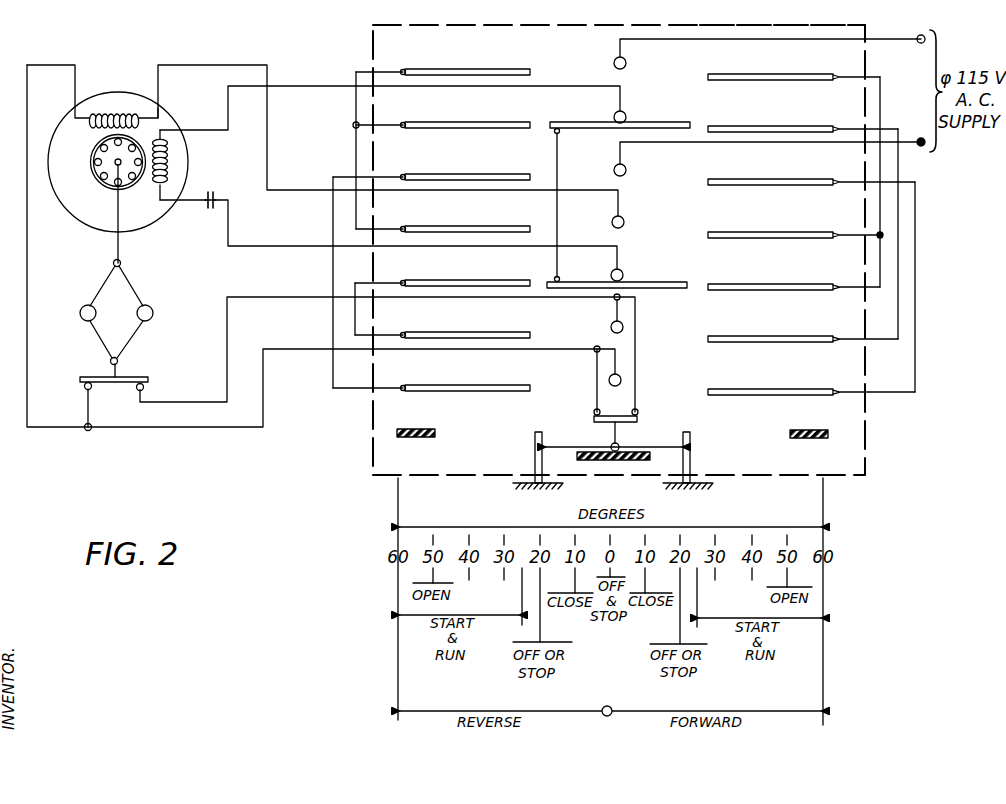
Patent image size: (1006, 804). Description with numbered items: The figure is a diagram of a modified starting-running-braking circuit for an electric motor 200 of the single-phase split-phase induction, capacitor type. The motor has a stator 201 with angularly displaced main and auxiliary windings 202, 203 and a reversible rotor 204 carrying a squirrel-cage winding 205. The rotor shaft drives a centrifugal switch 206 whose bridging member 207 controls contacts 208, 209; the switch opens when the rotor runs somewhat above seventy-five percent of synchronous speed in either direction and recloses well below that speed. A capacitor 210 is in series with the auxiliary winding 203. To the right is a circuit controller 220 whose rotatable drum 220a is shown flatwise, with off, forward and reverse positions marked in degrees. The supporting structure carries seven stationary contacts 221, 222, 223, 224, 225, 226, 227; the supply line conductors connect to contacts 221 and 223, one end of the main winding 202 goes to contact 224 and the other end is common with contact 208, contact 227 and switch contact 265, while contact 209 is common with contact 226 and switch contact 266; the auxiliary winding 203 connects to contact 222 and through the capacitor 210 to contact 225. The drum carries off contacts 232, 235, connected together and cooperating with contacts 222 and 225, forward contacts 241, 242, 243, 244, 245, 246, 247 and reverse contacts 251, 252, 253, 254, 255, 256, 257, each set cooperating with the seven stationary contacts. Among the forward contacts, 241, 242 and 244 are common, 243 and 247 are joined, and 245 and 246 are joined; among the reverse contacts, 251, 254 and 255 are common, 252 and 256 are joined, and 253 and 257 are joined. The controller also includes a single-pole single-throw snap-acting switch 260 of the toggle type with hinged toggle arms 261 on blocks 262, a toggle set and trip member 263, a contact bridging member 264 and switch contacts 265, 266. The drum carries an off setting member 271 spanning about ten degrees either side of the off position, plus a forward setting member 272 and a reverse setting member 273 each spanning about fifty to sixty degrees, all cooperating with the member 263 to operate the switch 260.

The electric motor 200 is at (130, 86).
The stator 201 is at (193, 112).
The main winding 202 is at (95, 118).
The auxiliary winding 203 is at (172, 168).
The reversible rotor 204 is at (97, 162).
The squirrel-cage winding 205 is at (108, 174).
The centrifugal switch 206 is at (176, 287).
The bridging member 207 is at (130, 372).
The contact 208 is at (84, 388).
The contact 209 is at (145, 388).
The capacitor 210 is at (210, 208).
The circuit controller 220 is at (430, 31).
The drum 220a is at (760, 33).
The stationary contact 221 is at (628, 68).
The stationary contact 222 is at (628, 116).
The stationary contact 223 is at (628, 169).
The stationary contact 224 is at (626, 221).
The stationary contact 225 is at (625, 274).
The stationary contact 226 is at (625, 326).
The stationary contact 227 is at (623, 379).
The off contact 232 is at (556, 127).
The off contact 235 is at (558, 281).
The forward contact 241 is at (415, 71).
The forward contact 242 is at (418, 128).
The forward contact 243 is at (415, 175).
The forward contact 244 is at (415, 228).
The forward contact 245 is at (415, 281).
The forward contact 246 is at (415, 333).
The forward contact 247 is at (415, 386).
The reverse contact 251 is at (745, 76).
The reverse contact 252 is at (745, 128).
The reverse contact 253 is at (742, 178).
The reverse contact 254 is at (742, 230).
The reverse contact 255 is at (742, 283).
The reverse contact 256 is at (742, 335).
The reverse contact 257 is at (742, 388).
The snap-acting switch 260 is at (611, 442).
The toggle arms 261 is at (582, 444).
The blocks 262 is at (535, 460).
The toggle set and trip member 263 is at (612, 452).
The contact bridging member 264 is at (594, 419).
The switch contact 265 is at (594, 408).
The switch contact 266 is at (638, 410).
The off setting member 271 is at (628, 462).
The forward setting member 272 is at (420, 428).
The reverse setting member 273 is at (792, 430).